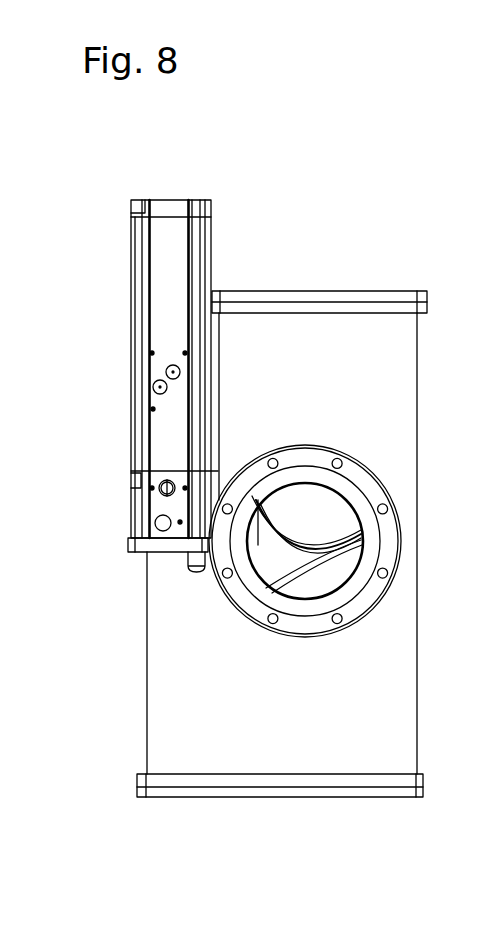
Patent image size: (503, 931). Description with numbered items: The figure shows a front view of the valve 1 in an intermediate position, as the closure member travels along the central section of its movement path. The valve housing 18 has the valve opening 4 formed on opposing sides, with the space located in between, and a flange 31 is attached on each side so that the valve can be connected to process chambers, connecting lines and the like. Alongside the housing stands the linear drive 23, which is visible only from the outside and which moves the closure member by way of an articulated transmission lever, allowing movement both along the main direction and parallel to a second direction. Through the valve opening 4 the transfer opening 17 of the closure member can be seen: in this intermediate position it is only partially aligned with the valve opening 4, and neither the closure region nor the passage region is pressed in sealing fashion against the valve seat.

The valve 1 is at (388, 235).
The linear drive 23 is at (170, 257).
The valve housing 18 is at (377, 695).
The flange 31 is at (378, 545).
The transfer opening 17 is at (331, 503).
The valve opening 4 is at (330, 569).